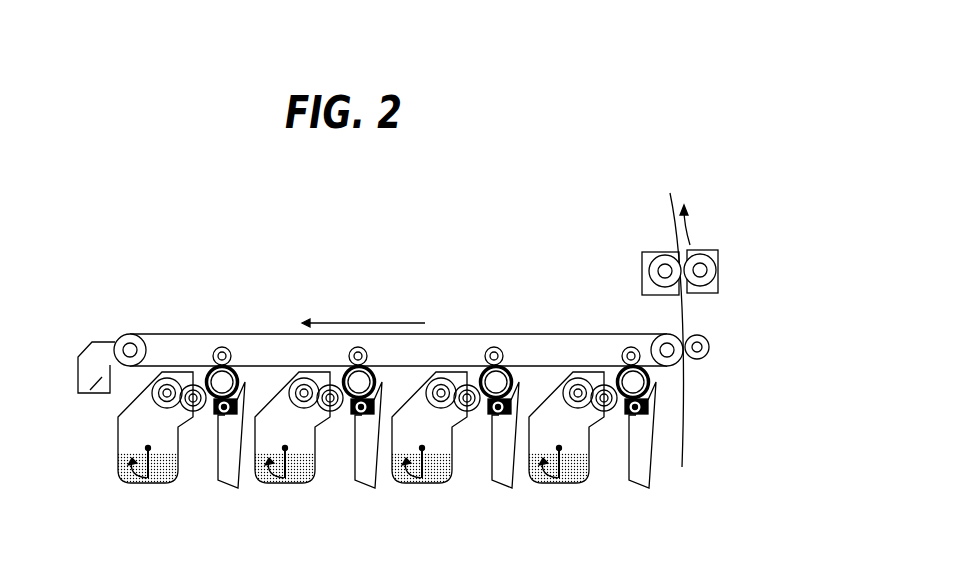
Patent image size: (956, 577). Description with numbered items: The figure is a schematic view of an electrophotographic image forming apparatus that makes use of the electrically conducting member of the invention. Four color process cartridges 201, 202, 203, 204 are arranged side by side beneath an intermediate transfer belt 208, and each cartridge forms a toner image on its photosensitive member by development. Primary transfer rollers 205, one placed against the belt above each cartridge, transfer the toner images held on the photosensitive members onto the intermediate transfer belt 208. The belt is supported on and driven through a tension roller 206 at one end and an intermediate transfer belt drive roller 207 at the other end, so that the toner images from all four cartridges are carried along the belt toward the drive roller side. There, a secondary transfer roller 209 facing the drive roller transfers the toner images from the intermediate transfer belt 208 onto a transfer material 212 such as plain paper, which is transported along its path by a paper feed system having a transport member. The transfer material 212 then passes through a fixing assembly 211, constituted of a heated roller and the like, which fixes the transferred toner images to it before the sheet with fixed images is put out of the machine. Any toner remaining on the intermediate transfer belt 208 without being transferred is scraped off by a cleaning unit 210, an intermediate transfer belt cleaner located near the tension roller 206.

The process cartridge 201 is at (113, 490).
The process cartridge 202 is at (252, 490).
The process cartridge 203 is at (391, 490).
The process cartridge 204 is at (530, 490).
The primary transfer roller 205 is at (212, 356).
The tension roller 206 is at (124, 337).
The intermediate transfer belt drive roller 207 is at (667, 333).
The intermediate transfer belt 208 is at (563, 333).
The secondary transfer roller 209 is at (709, 342).
The cleaning unit 210 is at (90, 395).
The fixing assembly 211 is at (704, 249).
The transfer material 212 is at (687, 400).